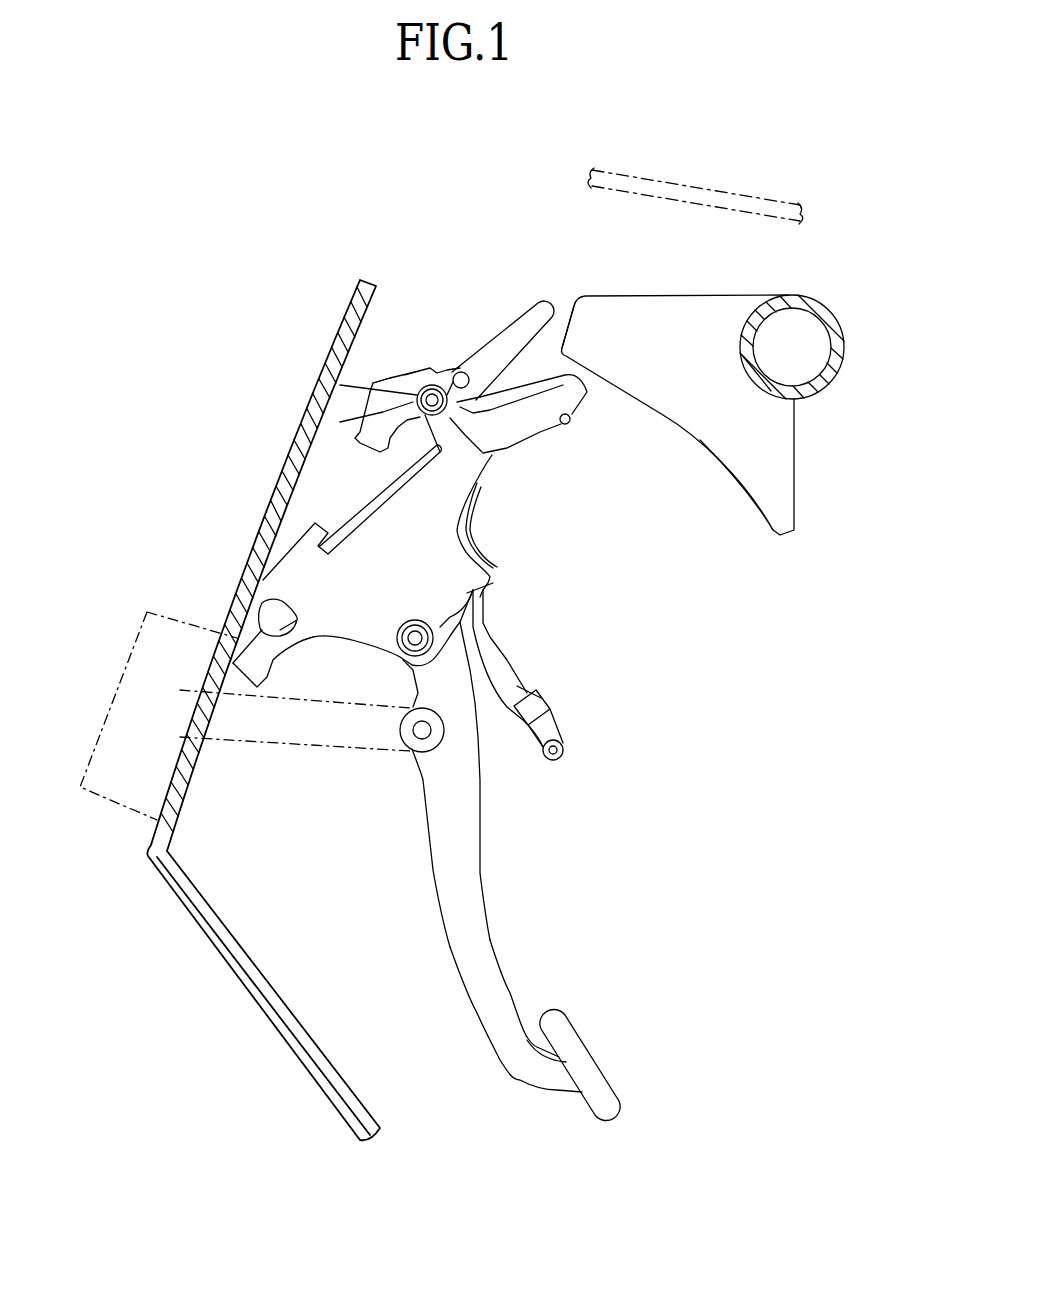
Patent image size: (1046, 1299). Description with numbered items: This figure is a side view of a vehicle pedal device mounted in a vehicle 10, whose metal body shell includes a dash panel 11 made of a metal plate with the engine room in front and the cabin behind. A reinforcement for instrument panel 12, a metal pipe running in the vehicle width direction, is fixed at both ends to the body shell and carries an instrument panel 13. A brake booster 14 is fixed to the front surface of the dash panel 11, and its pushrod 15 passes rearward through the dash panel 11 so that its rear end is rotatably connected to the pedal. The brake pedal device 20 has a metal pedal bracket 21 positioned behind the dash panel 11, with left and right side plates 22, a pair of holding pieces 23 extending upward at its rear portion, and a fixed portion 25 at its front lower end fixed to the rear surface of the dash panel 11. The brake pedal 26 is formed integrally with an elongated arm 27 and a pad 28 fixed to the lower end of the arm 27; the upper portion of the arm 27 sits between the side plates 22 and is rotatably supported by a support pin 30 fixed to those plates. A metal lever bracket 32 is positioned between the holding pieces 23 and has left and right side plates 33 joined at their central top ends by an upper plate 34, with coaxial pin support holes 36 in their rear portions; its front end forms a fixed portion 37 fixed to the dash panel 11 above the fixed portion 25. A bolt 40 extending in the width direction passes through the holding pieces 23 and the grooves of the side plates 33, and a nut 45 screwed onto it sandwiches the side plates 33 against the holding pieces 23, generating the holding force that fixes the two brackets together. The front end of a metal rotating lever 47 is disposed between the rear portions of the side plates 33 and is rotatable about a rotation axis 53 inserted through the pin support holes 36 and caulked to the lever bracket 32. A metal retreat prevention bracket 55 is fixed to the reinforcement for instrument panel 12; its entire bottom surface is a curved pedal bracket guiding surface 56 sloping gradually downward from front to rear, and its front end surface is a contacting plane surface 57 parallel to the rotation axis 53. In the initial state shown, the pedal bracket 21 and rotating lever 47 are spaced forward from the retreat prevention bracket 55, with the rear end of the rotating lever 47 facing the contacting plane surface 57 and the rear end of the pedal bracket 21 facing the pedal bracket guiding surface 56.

The vehicle 10 is at (607, 826).
The dash panel 11 is at (245, 958).
The reinforcement for instrument panel 12 is at (788, 295).
The instrument panel 13 is at (751, 192).
The brake booster 14 is at (157, 610).
The pushrod 15 is at (237, 735).
The brake pedal device 20 is at (641, 919).
The pedal bracket 21 is at (473, 563).
The side plates 22 is at (483, 590).
The holding pieces 23 is at (500, 451).
The fixed portion 25 is at (253, 612).
The brake pedal 26 is at (477, 880).
The arm 27 is at (488, 953).
The pad 28 is at (595, 1063).
The support pin 30 is at (413, 621).
The lever bracket 32 is at (392, 374).
The side plates 33 is at (387, 378).
The upper plate 34 is at (411, 375).
The pin support holes 36 is at (437, 384).
The fixed portion 37 is at (340, 385).
The bolt 40 is at (360, 432).
The nut 45 is at (340, 422).
The rotating lever 47 is at (516, 318).
The rotation axis 53 is at (462, 370).
The retreat prevention bracket 55 is at (687, 305).
The pedal bracket guiding surface 56 is at (727, 478).
The contacting plane surface 57 is at (568, 297).